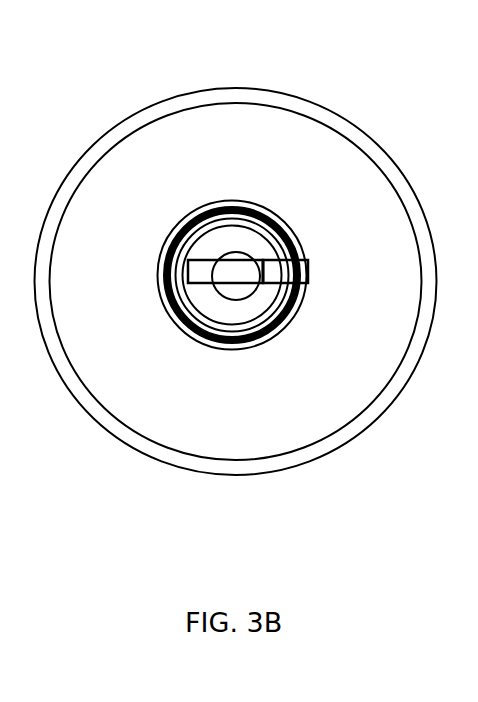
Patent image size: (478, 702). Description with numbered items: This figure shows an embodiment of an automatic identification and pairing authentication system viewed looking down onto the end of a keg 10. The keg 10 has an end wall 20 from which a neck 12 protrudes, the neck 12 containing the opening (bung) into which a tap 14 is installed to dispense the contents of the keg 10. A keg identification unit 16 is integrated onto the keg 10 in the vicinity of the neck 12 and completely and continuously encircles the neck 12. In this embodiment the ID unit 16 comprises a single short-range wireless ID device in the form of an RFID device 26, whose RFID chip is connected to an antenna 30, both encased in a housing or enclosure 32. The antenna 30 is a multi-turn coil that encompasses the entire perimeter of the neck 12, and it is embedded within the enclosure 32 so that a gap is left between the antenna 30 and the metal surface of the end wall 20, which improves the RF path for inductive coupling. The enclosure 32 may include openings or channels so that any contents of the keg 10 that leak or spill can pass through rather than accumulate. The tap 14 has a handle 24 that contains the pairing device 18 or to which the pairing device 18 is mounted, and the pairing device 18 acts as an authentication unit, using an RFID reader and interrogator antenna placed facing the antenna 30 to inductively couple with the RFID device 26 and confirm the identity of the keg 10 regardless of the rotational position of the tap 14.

The keg 10 is at (68, 372).
The end wall 20 is at (350, 365).
The keg identification (ID) unit 16 is at (150, 247).
The RFID device 26 is at (220, 200).
The enclosure 32 is at (177, 210).
The antenna 30 is at (162, 290).
The neck 12 is at (230, 299).
The handle 24 is at (210, 272).
The pairing device 18 is at (302, 272).
The tap 14 is at (251, 261).